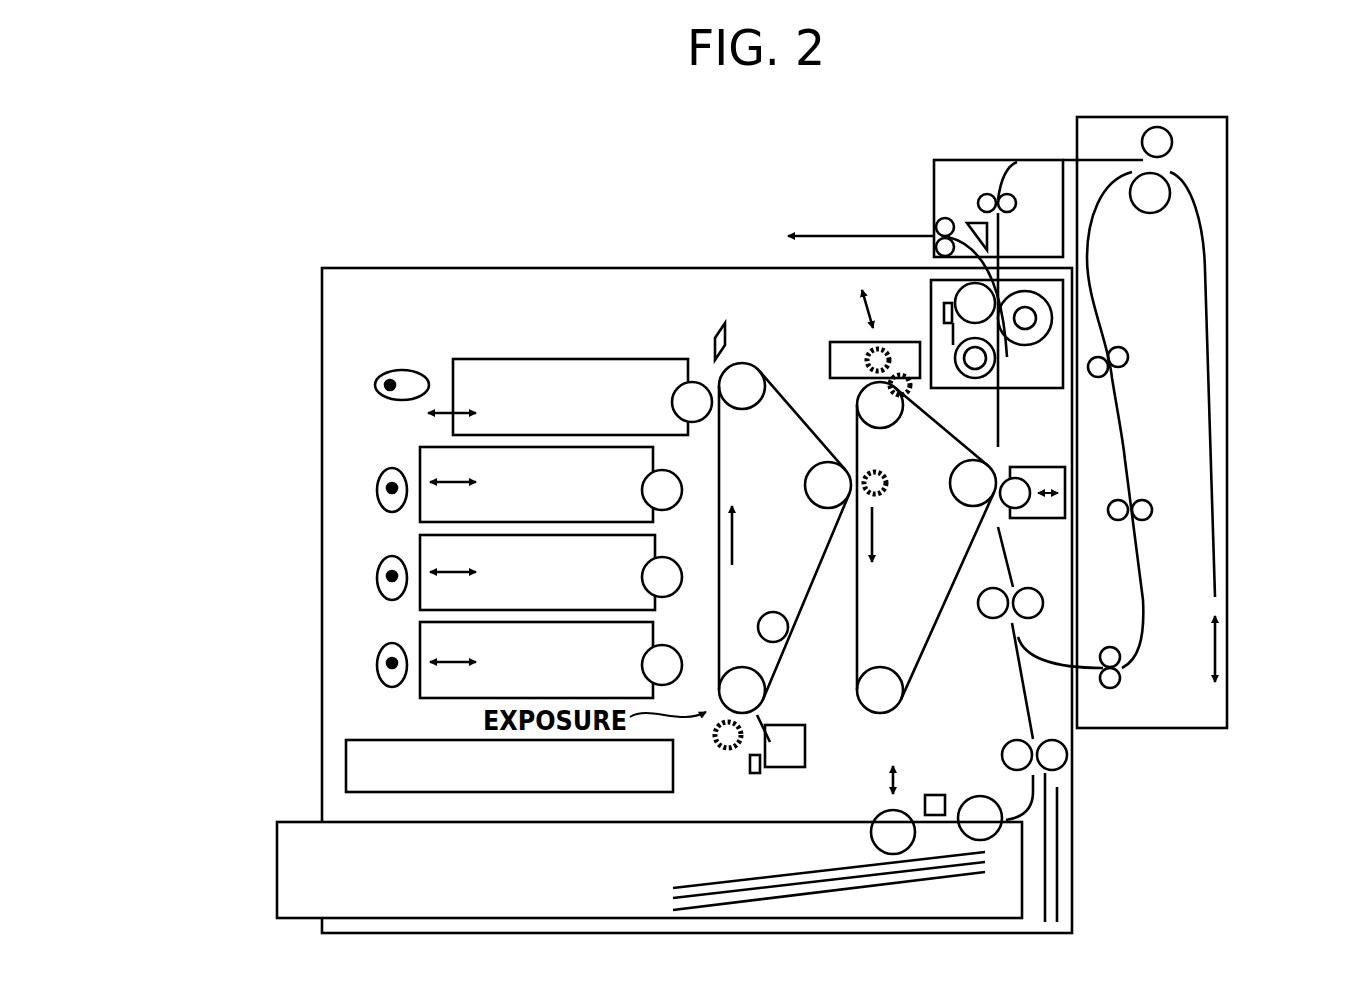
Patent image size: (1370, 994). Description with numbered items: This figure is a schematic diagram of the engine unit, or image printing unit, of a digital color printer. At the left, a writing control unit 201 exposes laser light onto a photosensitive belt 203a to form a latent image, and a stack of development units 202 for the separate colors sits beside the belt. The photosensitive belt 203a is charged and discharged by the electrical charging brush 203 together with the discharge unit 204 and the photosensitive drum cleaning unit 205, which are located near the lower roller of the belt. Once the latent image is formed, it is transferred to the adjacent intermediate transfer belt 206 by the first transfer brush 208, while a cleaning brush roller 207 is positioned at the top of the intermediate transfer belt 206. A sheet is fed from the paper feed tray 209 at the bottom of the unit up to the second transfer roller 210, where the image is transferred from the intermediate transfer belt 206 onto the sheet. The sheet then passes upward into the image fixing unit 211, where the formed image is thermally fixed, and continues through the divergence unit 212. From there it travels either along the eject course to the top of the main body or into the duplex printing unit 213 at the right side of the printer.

The writing control unit 201 is at (370, 740).
The development units 202 is at (525, 358).
The electrical charging brush 203 is at (723, 755).
The photosensitive belt 203a is at (718, 383).
The discharge unit 204 is at (859, 746).
The photosensitive drum cleaning unit 205 is at (807, 743).
The intermediate transfer belt 206 is at (943, 617).
The cleaning brush roller 207 is at (830, 363).
The first transfer brush 208 is at (888, 492).
The paper feed tray 209 is at (277, 873).
The second transfer roller 210 is at (1037, 520).
The image fixing unit 211 is at (1033, 390).
The divergence unit 212 is at (934, 175).
The duplex printing unit 213 is at (1228, 333).